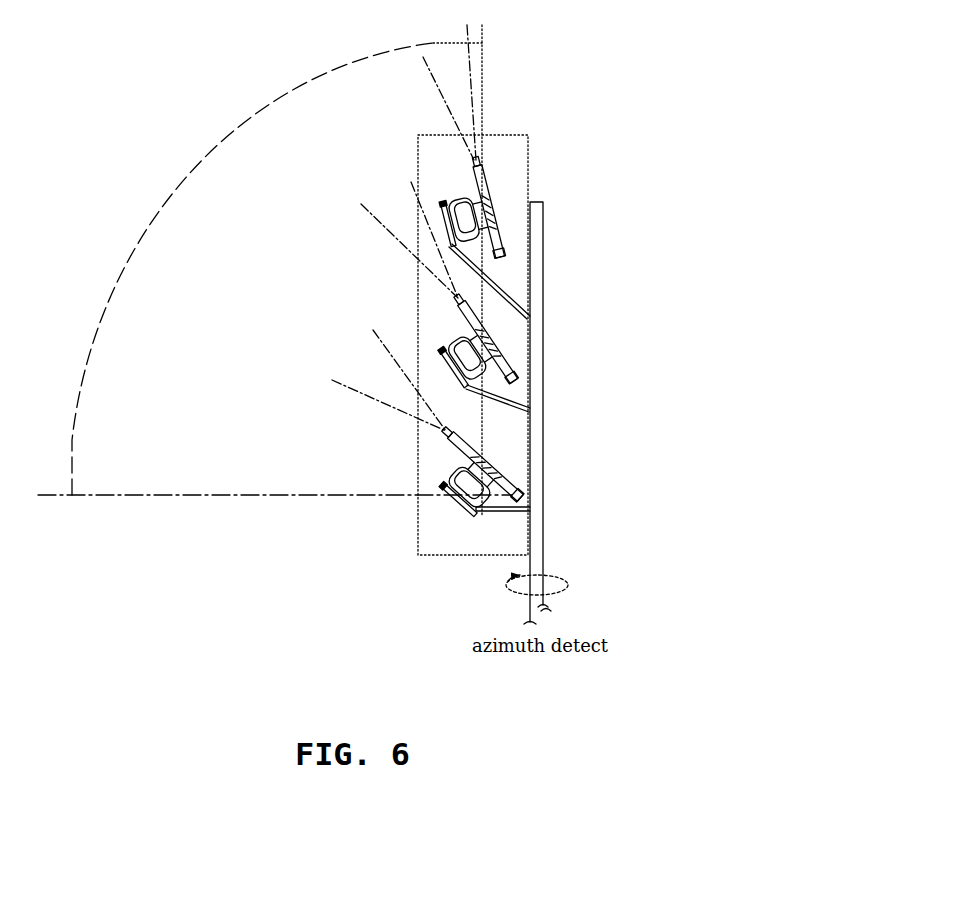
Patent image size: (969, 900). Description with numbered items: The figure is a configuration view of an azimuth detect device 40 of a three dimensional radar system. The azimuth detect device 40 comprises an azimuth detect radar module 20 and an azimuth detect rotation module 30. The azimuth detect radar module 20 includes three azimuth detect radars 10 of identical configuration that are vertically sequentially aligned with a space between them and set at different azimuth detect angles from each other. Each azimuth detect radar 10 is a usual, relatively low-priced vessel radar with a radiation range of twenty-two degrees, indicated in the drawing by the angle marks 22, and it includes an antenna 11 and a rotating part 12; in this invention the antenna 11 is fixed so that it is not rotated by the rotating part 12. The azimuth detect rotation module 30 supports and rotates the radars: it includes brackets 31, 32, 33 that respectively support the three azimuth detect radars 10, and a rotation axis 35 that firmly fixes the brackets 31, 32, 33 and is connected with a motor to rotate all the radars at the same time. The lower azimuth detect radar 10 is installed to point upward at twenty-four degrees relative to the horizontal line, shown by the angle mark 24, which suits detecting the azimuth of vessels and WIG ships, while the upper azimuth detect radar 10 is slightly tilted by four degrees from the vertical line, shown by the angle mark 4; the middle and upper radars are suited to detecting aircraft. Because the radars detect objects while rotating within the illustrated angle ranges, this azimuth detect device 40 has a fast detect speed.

The offset angle 4 is at (498, 33).
The azimuth detect radar 10 is at (403, 497).
The antenna 11 is at (447, 437).
The rotating part 12 is at (455, 505).
The azimuth detect radar module 20 is at (529, 137).
The tilt angle range 22 is at (470, 72).
The tilt angle 24 is at (447, 461).
The azimuth detect rotation module 30 is at (640, 335).
The bracket 31 is at (530, 308).
The bracket 32 is at (530, 395).
The bracket 33 is at (457, 490).
The rotation axis 35 is at (543, 504).
The azimuth detect device 40 is at (570, 220).